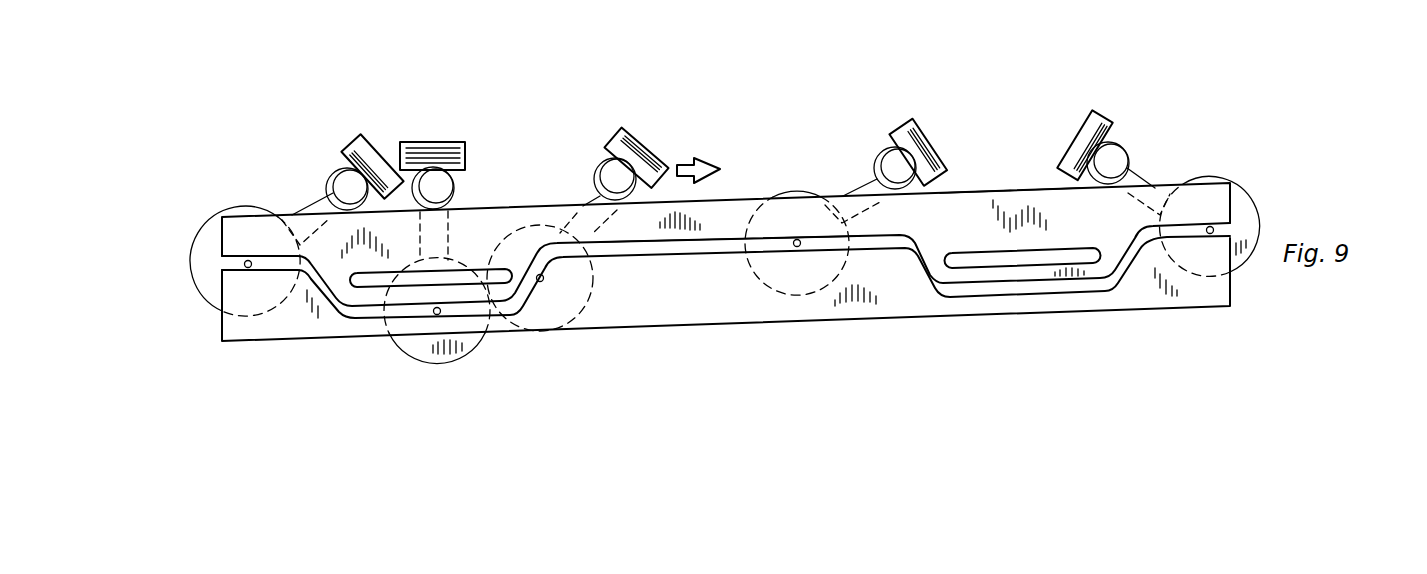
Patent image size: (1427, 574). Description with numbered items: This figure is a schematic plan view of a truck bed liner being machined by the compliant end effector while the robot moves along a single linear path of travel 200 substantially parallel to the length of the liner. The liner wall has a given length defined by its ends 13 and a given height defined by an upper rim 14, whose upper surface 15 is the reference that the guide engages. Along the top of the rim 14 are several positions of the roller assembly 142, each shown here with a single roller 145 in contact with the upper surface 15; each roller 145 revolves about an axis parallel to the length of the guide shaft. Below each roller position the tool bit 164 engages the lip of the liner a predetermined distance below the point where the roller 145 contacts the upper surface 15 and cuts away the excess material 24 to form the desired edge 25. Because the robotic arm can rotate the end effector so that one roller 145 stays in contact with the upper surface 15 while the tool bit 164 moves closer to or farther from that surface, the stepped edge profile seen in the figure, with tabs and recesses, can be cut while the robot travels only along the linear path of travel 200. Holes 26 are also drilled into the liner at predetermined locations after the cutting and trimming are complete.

The end 13 is at (233, 327).
The upper rim 14 is at (975, 190).
The upper surface 15 is at (1035, 188).
The excess material 24 is at (677, 308).
The desired edge 25 is at (723, 249).
The holes 26 is at (377, 283).
The roller assembly 142 is at (352, 140).
The roller 145 is at (337, 180).
The tool bit 164 is at (245, 264).
The linear path of travel 200 is at (692, 160).